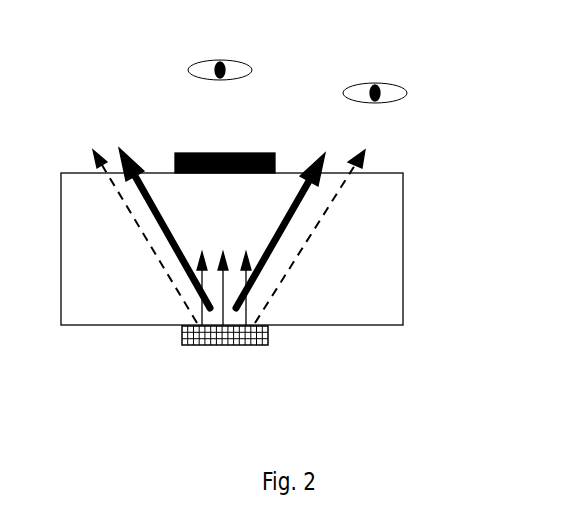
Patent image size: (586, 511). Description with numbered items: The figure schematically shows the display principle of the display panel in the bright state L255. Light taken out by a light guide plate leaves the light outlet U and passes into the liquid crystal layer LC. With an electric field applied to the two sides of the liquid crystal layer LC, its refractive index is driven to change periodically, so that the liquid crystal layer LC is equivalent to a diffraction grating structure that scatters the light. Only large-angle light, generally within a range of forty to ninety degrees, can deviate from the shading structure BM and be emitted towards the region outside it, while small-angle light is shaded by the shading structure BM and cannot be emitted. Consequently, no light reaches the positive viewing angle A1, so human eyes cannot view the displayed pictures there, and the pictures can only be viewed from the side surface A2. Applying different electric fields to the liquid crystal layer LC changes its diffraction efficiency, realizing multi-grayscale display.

The positive viewing angle position A1 is at (220, 46).
The side surface position A2 is at (375, 73).
The shading structure BM is at (272, 152).
The liquid crystal layer LC is at (375, 252).
The light outlet U is at (270, 352).
The bright state L255 is at (229, 302).